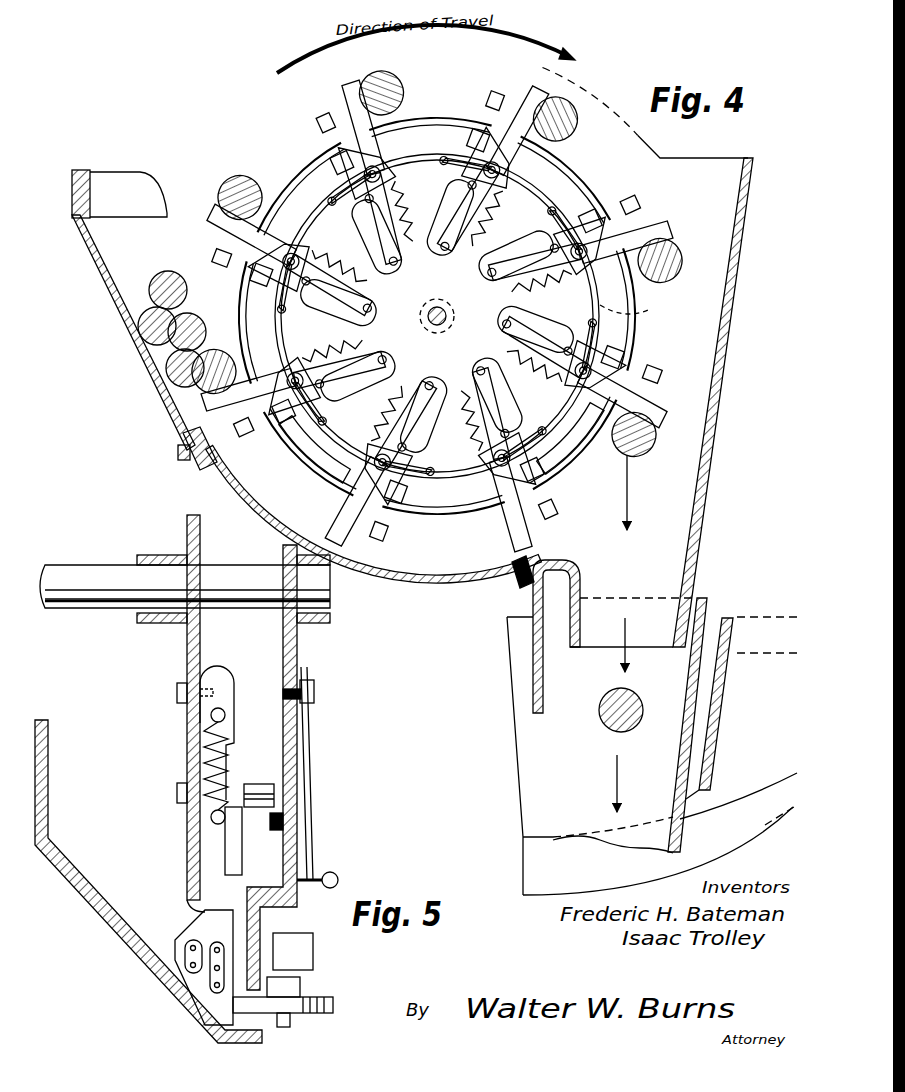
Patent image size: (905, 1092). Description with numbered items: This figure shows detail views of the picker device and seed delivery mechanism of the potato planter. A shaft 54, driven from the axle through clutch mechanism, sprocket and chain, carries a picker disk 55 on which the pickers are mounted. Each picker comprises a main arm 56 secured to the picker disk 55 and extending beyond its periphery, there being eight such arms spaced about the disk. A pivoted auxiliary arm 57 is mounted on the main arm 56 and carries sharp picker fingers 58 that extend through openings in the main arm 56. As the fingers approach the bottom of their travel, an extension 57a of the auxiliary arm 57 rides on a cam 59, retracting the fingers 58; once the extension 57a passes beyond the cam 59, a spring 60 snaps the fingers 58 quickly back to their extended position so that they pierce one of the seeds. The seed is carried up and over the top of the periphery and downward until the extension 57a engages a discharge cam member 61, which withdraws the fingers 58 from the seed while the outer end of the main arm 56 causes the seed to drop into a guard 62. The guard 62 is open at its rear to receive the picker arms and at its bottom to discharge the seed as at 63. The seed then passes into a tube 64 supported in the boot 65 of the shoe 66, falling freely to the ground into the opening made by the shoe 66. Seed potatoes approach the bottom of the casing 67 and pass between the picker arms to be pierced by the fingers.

In FIG. 4, the shaft 54 is at (455, 318).
In FIG. 5, the shaft 54 is at (312, 596).
In FIG. 4, the picker disk 55 is at (240, 298).
In FIG. 5, the picker disk 55 is at (193, 738).
In FIG. 4, the main arm 56 is at (480, 262).
In FIG. 5, the main arm 56 is at (218, 690).
In FIG. 4, the pivoted auxiliary arm 57 is at (516, 100).
In FIG. 5, the pivoted auxiliary arm 57 is at (200, 912).
In FIG. 4, the extension of the arm 57a is at (590, 225).
In FIG. 5, the extension of the arm 57a is at (262, 790).
In FIG. 4, the picker fingers 58 is at (562, 112).
In FIG. 5, the picker fingers 58 is at (213, 943).
In FIG. 4, the cam 59 is at (632, 312).
In FIG. 5, the cam 59 is at (283, 812).
In FIG. 4, the spring 60 is at (540, 282).
In FIG. 5, the spring 60 is at (203, 781).
In FIG. 4, the discharge cam member 61 is at (552, 415).
In FIG. 4, the guard 62 is at (712, 362).
In FIG. 4, the seed discharge 63 is at (645, 712).
In FIG. 4, the tube 64 is at (670, 672).
In FIG. 4, the boot 65 is at (697, 760).
In FIG. 4, the shoe 66 is at (745, 842).
In FIG. 4, the casing 67 is at (436, 575).
In FIG. 5, the casing 67 is at (178, 992).